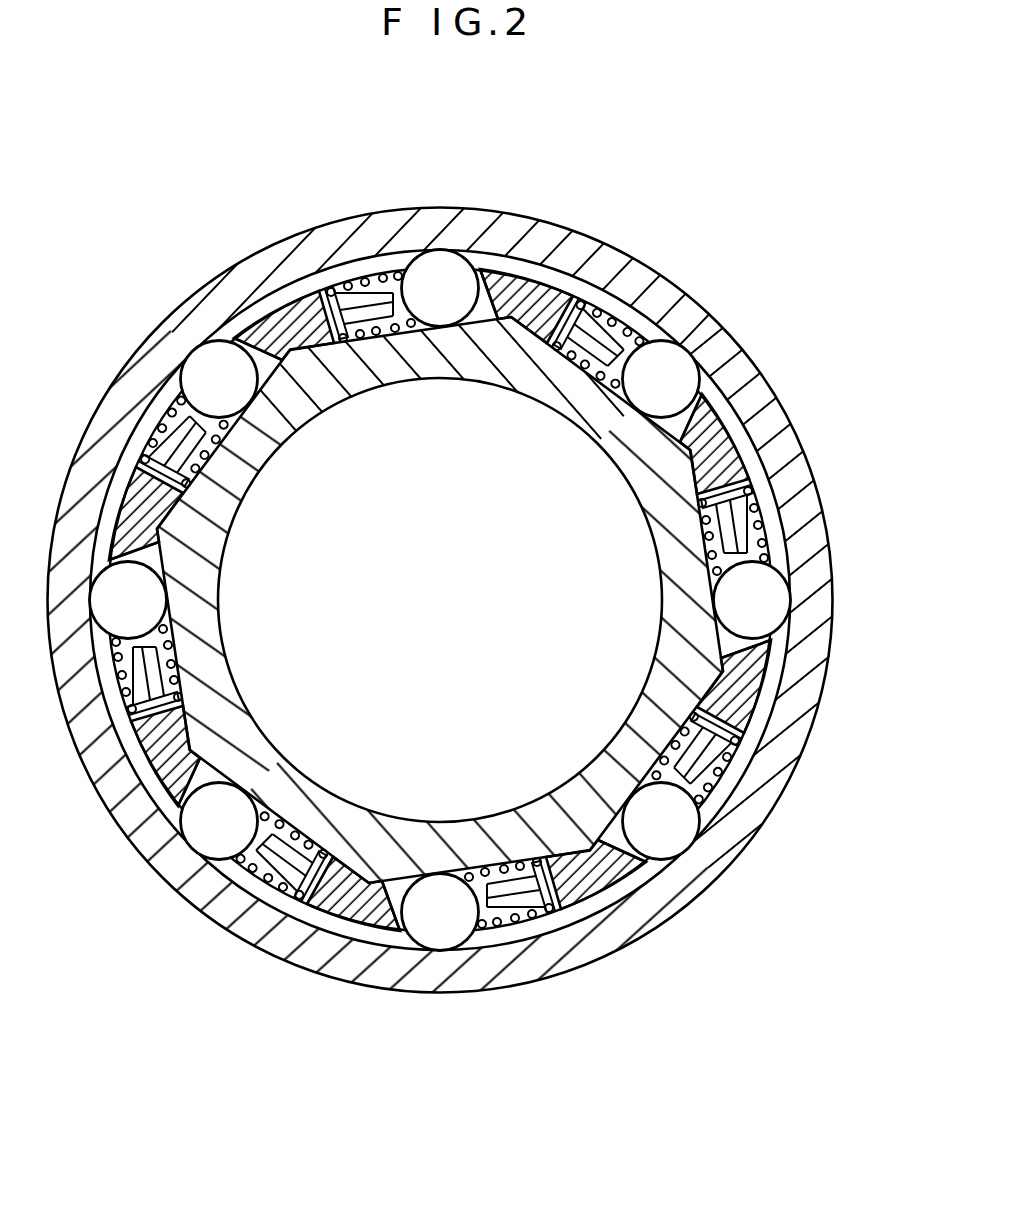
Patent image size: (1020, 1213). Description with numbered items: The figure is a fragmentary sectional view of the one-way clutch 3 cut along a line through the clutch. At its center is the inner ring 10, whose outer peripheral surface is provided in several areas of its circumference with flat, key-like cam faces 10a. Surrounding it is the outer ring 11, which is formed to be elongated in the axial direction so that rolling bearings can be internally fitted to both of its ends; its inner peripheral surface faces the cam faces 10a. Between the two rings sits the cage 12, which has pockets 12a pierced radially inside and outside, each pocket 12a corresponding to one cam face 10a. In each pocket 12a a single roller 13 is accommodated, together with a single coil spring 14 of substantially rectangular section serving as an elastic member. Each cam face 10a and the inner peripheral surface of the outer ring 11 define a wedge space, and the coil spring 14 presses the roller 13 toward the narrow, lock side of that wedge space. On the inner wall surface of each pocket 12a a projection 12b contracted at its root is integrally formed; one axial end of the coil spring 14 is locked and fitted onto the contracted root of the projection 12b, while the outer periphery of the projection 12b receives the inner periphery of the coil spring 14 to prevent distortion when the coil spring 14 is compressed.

The one-way clutch 3 is at (481, 600).
The inner ring 10 is at (516, 600).
The cam face 10a is at (474, 868).
The outer ring 11 is at (513, 233).
The cage 12 is at (494, 600).
The pocket 12a is at (684, 364).
The projection 12b is at (640, 470).
The roller 13 is at (712, 335).
The coil spring 14 is at (632, 310).